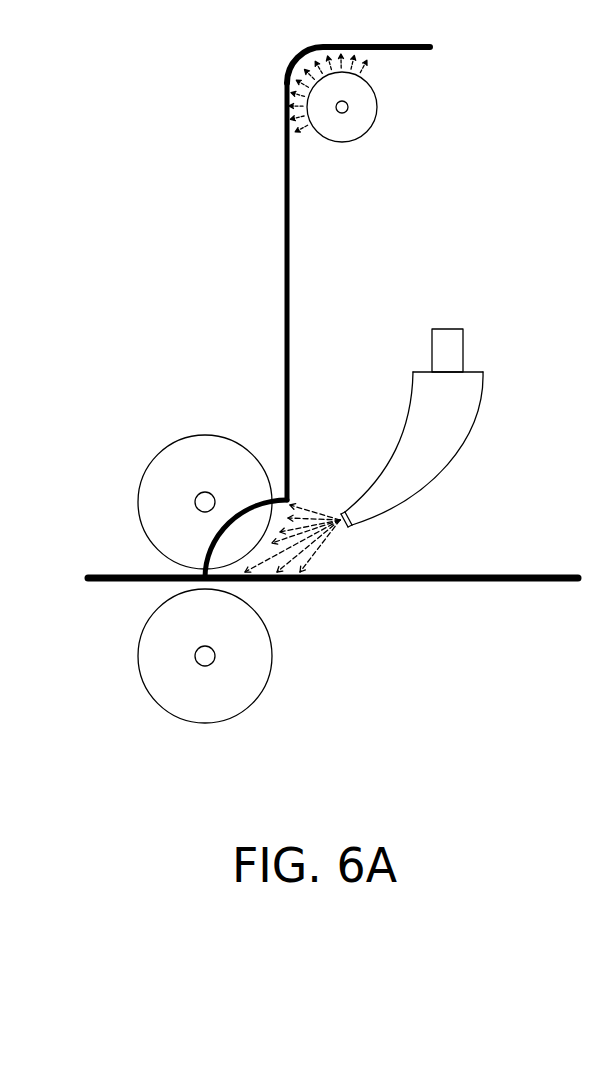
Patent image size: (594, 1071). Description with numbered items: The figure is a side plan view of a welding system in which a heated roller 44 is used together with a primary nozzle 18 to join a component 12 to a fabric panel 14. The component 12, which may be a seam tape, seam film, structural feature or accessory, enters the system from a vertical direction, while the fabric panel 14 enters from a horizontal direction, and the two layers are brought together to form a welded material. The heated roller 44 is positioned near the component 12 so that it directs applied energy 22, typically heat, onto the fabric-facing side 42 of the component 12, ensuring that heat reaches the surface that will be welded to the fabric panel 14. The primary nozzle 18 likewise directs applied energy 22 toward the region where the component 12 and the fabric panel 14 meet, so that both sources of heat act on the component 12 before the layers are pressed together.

The component 12 is at (283, 229).
The fabric panel 14 is at (503, 576).
The primary nozzle 18 is at (465, 418).
The applied energy 22 is at (367, 63).
The fabric-facing side 42 is at (288, 322).
The heated roller 44 is at (340, 120).